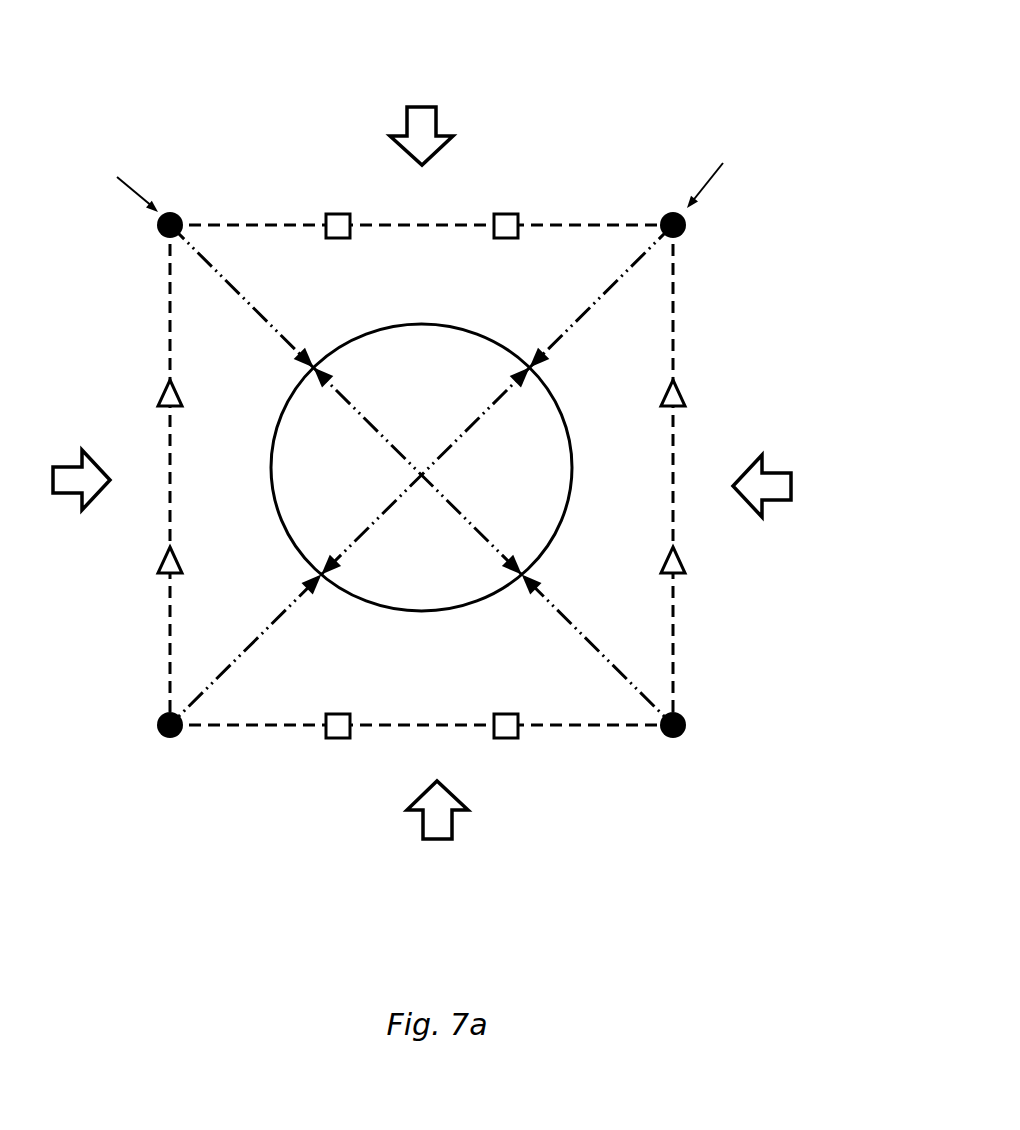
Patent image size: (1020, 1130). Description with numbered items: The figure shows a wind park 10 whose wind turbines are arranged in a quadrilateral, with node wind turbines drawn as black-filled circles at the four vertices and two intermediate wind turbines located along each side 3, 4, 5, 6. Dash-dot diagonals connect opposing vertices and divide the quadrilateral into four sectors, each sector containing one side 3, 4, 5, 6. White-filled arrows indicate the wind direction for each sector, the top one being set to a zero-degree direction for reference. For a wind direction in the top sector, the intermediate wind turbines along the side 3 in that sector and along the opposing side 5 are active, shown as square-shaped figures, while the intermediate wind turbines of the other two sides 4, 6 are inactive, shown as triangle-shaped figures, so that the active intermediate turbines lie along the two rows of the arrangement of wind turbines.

The wind park 10 is at (683, 97).
The side 3 is at (558, 240).
The side 4 is at (660, 618).
The side 5 is at (285, 712).
The side 6 is at (182, 327).